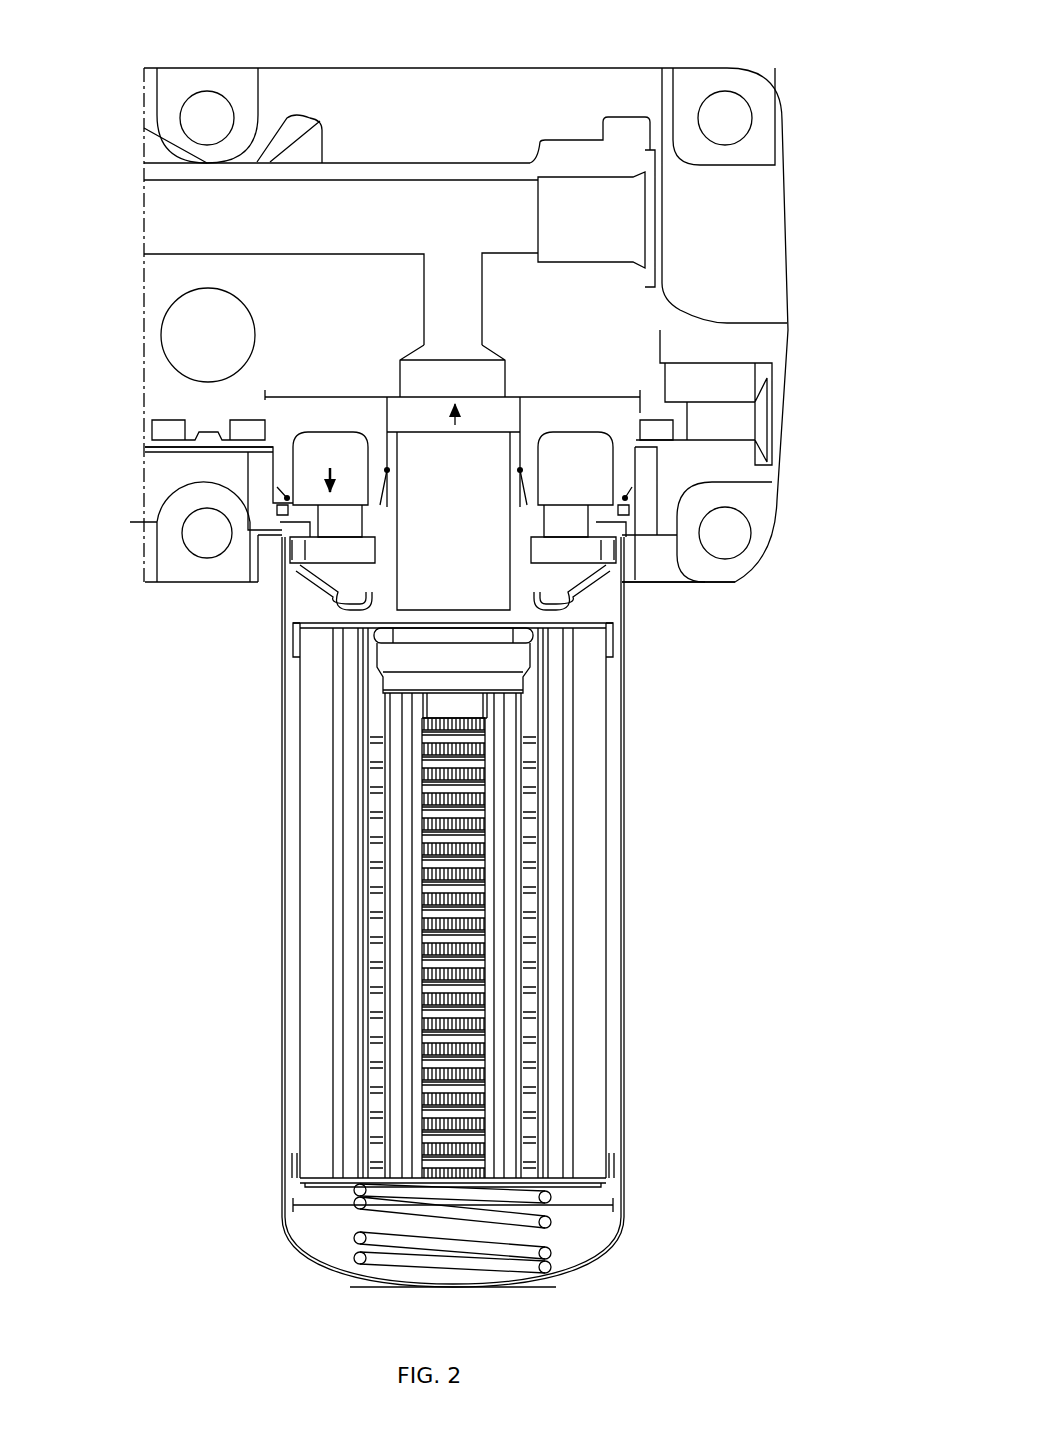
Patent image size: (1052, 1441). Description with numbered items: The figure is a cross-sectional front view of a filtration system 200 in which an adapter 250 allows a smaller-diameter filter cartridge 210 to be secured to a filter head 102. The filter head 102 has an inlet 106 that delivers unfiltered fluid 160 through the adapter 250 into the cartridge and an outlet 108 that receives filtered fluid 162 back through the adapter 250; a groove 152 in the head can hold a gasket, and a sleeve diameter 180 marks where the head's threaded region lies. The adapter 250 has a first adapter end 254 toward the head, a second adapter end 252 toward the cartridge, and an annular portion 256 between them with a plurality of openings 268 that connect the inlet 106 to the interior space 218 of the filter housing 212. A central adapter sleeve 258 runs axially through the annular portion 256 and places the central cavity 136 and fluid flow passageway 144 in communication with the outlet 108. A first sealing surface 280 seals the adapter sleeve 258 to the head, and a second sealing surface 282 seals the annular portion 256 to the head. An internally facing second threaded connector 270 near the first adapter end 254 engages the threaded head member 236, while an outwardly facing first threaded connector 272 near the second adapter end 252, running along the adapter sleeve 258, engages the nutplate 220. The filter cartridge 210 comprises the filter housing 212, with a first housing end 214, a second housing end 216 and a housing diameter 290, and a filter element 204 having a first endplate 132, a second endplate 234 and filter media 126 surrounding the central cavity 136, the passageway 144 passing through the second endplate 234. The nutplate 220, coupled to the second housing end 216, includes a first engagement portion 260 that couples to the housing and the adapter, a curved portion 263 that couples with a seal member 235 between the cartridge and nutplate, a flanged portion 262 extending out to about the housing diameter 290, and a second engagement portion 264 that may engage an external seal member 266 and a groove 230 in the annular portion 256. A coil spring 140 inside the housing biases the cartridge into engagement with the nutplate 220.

The filtration system 200 is at (142, 52).
The filter head 102 is at (158, 248).
The outlet 108 is at (453, 284).
The groove 152 is at (700, 425).
The adapter 250 is at (652, 436).
The inlet 106 is at (322, 438).
The first adapter end 254 is at (404, 428).
The sleeve diameter 180 is at (522, 395).
The adapter sleeve 258 is at (402, 522).
The filtered fluid 162 is at (483, 414).
The unfiltered fluid 160 is at (330, 468).
The openings 268 is at (565, 515).
The first sealing surface 280 is at (522, 468).
The threaded head member 236 is at (272, 462).
The second threaded connector 270 is at (286, 488).
The second sealing surface 282 is at (630, 498).
The annular portion 256 is at (292, 525).
The nutplate 220 is at (283, 560).
The groove 230 is at (615, 528).
The external seal member 266 is at (618, 547).
The second housing end 216 is at (283, 548).
The first threaded connector 272 is at (355, 577).
The flanged portion 262 is at (592, 578).
The second engagement portion 264 is at (637, 548).
The curved portion 263 is at (393, 615).
The second adapter end 252 is at (385, 632).
The first engagement portion 260 is at (335, 592).
The seal member 235 is at (612, 641).
The second endplate 234 is at (527, 660).
The fluid flow passageway 144 is at (503, 655).
The filter housing 212 is at (282, 1050).
The filter element 204 is at (294, 1107).
The interior space 218 is at (620, 1100).
The filter media 126 is at (598, 1048).
The filter cartridge 210 is at (634, 951).
The central cavity 136 is at (484, 800).
The first endplate 132 is at (612, 1183).
The housing diameter 290 is at (562, 1211).
The coil spring 140 is at (355, 1251).
The first housing end 214 is at (465, 1289).